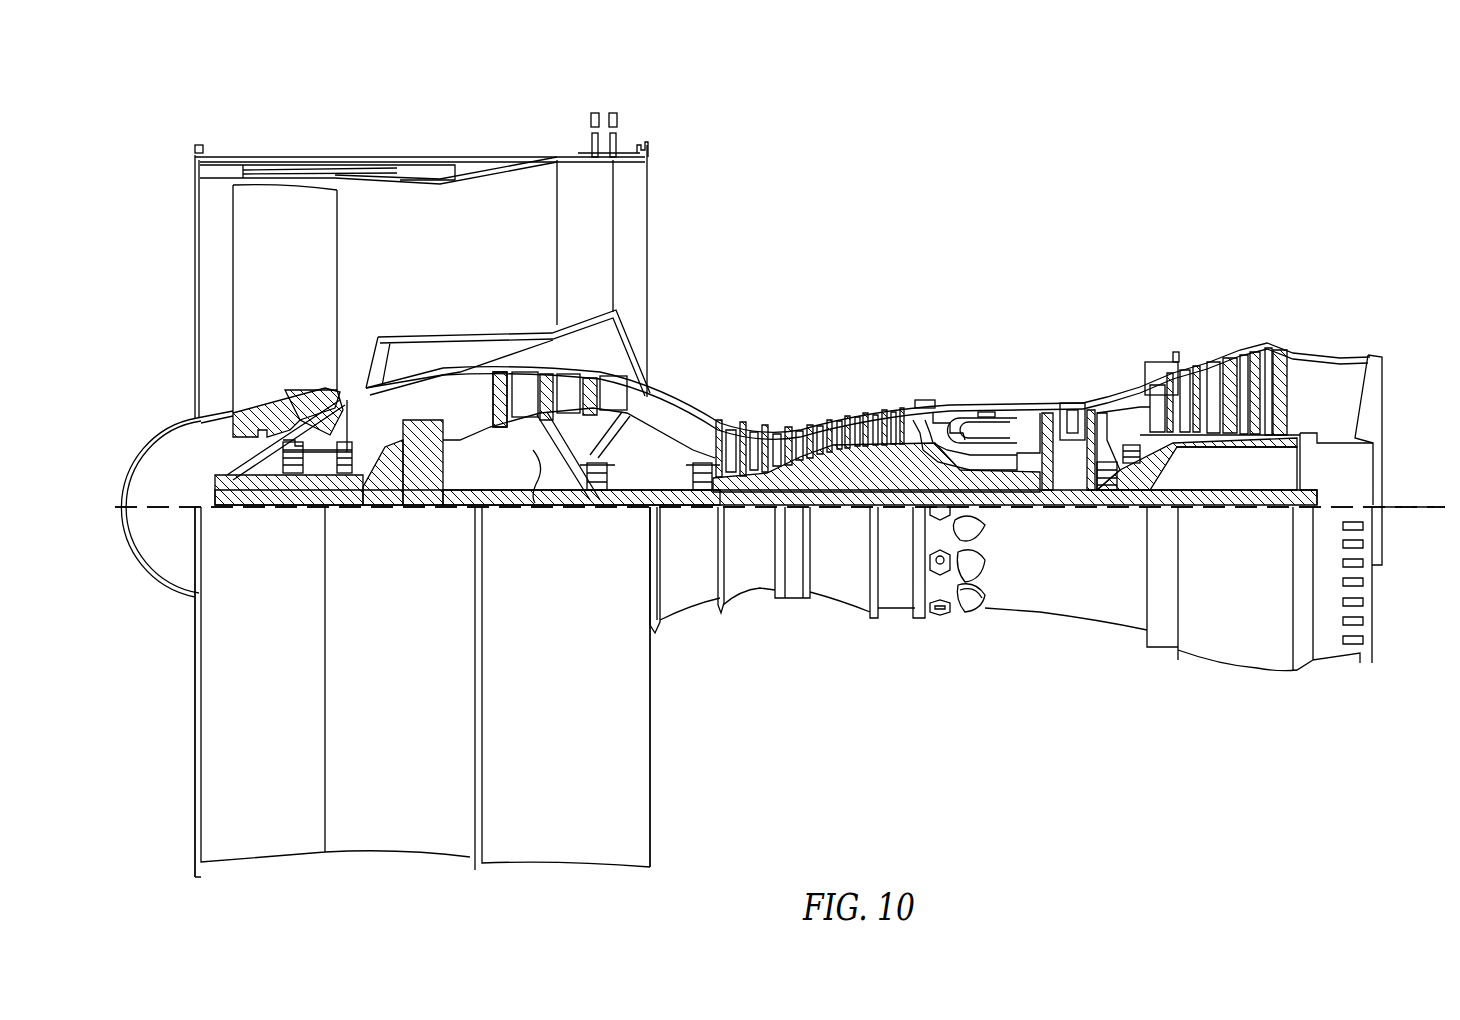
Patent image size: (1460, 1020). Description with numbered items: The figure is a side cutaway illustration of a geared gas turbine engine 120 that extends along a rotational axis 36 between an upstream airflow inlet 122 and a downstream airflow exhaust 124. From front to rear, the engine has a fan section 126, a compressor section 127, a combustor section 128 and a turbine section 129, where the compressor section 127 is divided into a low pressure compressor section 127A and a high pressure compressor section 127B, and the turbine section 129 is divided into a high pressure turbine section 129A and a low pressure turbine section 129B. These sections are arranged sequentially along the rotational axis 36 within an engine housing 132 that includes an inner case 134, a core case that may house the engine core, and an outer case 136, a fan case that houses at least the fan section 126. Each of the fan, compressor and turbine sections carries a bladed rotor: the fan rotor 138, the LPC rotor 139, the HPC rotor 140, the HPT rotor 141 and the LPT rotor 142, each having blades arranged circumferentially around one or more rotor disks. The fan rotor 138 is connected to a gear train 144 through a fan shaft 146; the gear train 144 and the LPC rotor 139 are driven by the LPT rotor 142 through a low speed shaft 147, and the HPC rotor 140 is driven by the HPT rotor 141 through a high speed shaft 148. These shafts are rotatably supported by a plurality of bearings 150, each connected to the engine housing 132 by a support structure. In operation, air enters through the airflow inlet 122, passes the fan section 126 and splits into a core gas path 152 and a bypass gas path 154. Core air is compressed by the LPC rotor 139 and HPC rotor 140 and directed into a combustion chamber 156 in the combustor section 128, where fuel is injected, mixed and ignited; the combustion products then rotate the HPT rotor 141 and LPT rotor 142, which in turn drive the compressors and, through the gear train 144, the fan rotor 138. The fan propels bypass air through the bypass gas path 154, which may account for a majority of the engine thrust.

The geared gas turbine engine 120 is at (158, 130).
The upstream airflow inlet 122 is at (195, 236).
The downstream airflow exhaust 124 is at (1377, 392).
The fan section 126 is at (385, 127).
The compressor section 127 is at (465, 63).
The low pressure compressor (LPC) section 127A is at (650, 113).
The high pressure compressor (HPC) section 127B is at (895, 295).
The combustor section 128 is at (918, 292).
The turbine section 129 is at (1040, 218).
The high pressure turbine (HPT) section 129A is at (1125, 292).
The low pressure turbine (LPT) section 129B is at (1325, 292).
The engine housing 132 is at (682, 641).
The inner case 134 is at (895, 608).
The outer case 136 is at (600, 867).
The fan rotor 138 is at (196, 420).
The LPC rotor 139 is at (537, 492).
The HPC rotor 140 is at (847, 492).
The HPT rotor 141 is at (1068, 497).
The LPT rotor 142 is at (1232, 443).
The gear train 144 is at (427, 497).
The fan shaft 146 is at (270, 508).
The low speed shaft 147 is at (1240, 507).
The high speed shaft 148 is at (998, 503).
The bearings 150 is at (318, 505).
The core gas path 152 is at (672, 419).
The bypass gas path 154 is at (437, 265).
The combustion chamber 156 is at (988, 432).
The rotational axis 36 is at (1437, 512).